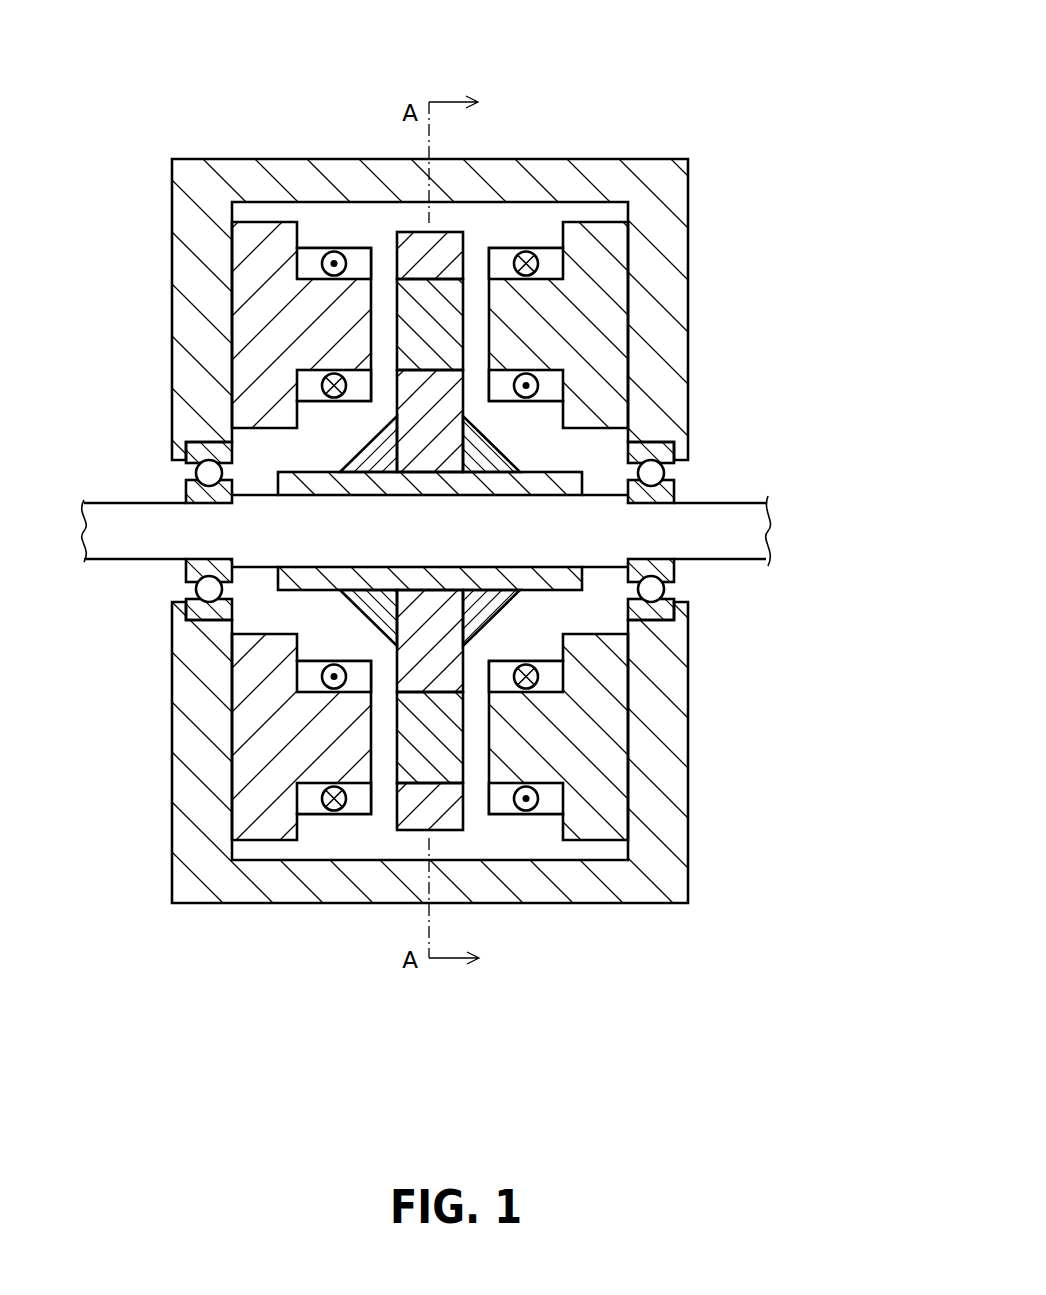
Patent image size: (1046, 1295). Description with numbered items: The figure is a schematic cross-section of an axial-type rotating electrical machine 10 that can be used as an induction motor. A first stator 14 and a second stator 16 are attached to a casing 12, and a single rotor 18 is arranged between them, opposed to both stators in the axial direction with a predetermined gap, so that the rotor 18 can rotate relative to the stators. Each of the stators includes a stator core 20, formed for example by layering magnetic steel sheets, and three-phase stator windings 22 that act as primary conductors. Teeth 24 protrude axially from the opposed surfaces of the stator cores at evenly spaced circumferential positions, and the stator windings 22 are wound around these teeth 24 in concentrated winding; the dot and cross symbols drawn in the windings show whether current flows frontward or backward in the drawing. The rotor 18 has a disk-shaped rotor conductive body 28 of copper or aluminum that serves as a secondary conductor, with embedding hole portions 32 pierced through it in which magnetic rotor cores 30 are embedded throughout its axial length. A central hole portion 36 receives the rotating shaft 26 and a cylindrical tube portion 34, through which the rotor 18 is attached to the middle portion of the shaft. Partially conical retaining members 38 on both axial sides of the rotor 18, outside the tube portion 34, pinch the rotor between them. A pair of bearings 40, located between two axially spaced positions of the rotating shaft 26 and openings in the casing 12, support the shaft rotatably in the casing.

The rotating electrical machine 10 is at (462, 557).
The casing 12 is at (663, 235).
The first stator 14 is at (243, 336).
The second stator 16 is at (598, 318).
The rotor 18 is at (432, 243).
The stator core 20 is at (258, 778).
The stator windings 22 is at (313, 258).
The teeth 24 is at (355, 297).
The rotating shaft 26 is at (708, 513).
The rotor conductive body 28 is at (413, 818).
The rotor cores 30 is at (447, 333).
The embedding hole portions 32 is at (405, 291).
The tube portion 34 is at (575, 470).
The hole portion 36 is at (415, 580).
The retaining members 38 is at (375, 455).
The bearings 40 is at (186, 574).